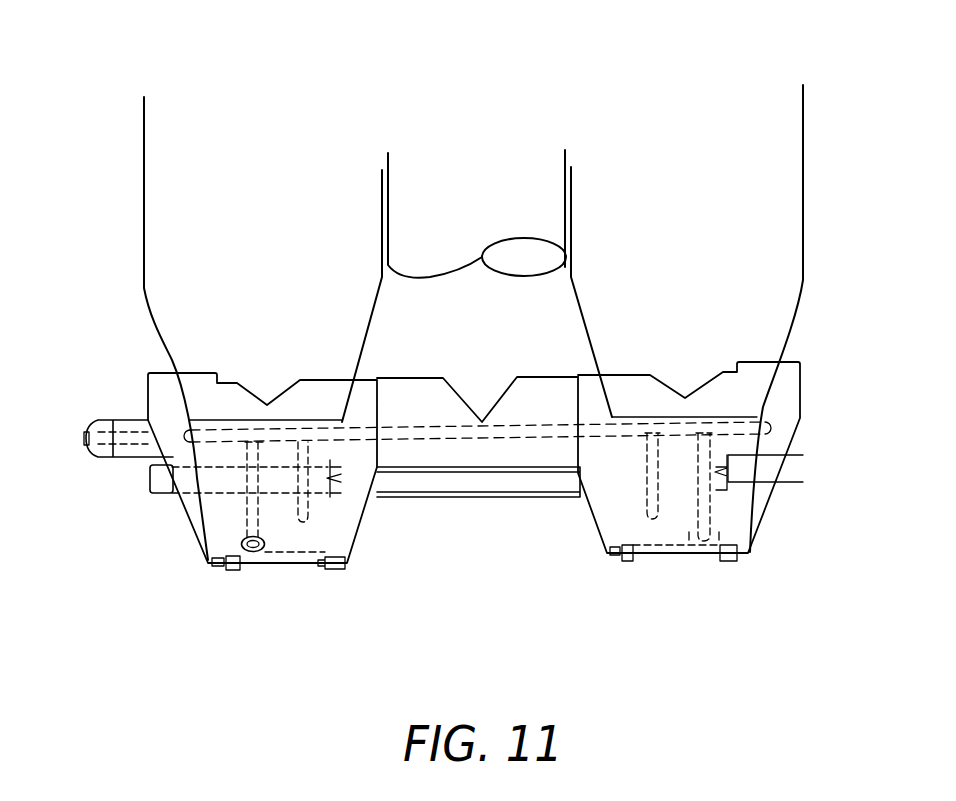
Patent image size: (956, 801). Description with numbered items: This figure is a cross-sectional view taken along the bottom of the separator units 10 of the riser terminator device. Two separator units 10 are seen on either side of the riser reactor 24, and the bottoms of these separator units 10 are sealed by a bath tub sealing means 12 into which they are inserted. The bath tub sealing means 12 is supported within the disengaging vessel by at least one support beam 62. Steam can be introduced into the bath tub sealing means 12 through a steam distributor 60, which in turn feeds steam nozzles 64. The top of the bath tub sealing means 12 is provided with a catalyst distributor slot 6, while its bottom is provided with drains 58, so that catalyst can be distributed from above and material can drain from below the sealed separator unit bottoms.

The separator unit 10 is at (240, 133).
The riser reactor 24 is at (458, 136).
The catalyst distributor slot 6 is at (470, 393).
The bath tub sealing means 12 is at (770, 493).
The drains 58 is at (310, 570).
The steam distributor 60 is at (119, 473).
The support beam 62 is at (157, 497).
The steam nozzles 64 is at (247, 553).